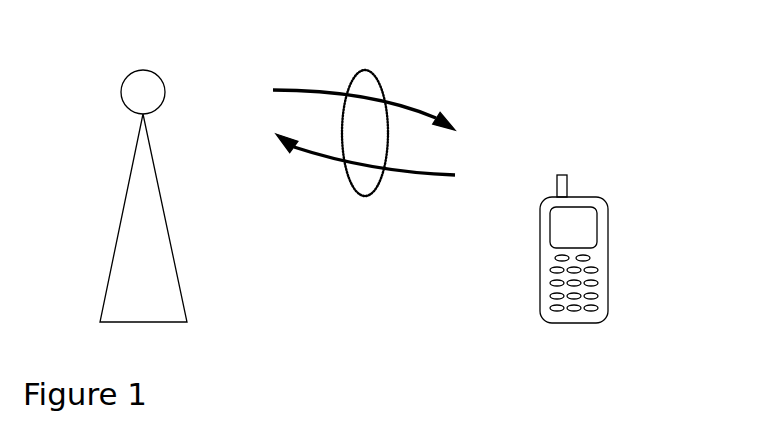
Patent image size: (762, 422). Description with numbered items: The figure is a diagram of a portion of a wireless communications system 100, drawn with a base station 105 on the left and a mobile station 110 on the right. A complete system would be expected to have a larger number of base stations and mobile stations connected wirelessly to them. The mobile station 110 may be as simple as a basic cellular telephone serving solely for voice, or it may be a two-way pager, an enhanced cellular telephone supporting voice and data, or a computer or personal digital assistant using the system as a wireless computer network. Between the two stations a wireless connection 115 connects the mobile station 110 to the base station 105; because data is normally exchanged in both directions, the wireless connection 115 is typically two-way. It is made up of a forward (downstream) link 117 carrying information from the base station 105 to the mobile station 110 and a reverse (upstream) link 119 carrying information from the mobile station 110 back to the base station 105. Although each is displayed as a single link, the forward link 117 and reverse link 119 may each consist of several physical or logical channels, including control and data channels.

The wireless communications system 100 is at (555, 84).
The base station 105 is at (118, 237).
The mobile station 110 is at (610, 237).
The wireless connection 115 is at (380, 80).
The forward link 117 is at (310, 88).
The reverse link 119 is at (420, 175).